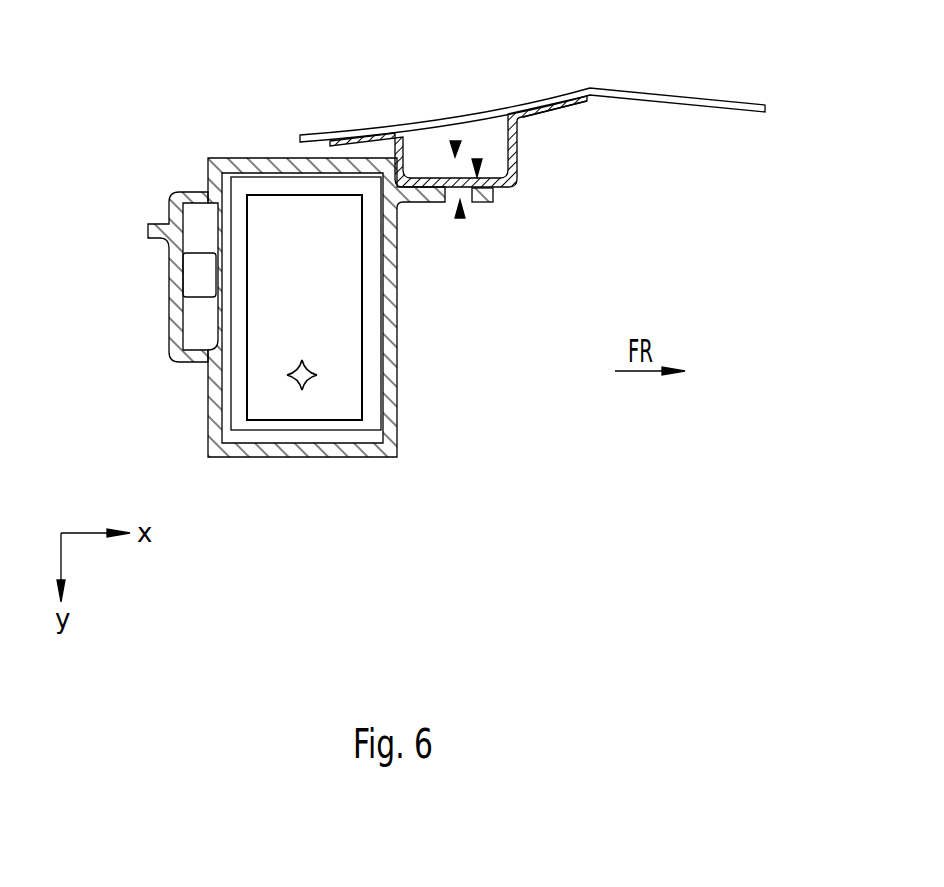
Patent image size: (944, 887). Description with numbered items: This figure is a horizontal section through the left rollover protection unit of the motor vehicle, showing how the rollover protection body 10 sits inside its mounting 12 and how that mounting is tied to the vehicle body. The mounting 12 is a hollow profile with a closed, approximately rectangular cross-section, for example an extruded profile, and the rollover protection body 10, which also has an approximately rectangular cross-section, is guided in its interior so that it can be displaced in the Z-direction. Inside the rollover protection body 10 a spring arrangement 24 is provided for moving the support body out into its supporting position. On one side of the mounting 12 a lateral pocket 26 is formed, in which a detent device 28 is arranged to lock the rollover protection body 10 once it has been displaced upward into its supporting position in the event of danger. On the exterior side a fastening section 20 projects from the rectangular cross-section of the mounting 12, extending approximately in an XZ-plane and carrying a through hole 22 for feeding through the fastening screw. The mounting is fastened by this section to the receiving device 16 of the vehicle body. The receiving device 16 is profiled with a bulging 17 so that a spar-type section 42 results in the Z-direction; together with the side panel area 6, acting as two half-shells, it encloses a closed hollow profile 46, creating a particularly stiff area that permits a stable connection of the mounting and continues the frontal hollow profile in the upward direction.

The side panel area 6 is at (650, 92).
The rollover protection body 10 is at (370, 356).
The mounting 12 is at (377, 448).
The receiving device 16 is at (573, 103).
The bulging 17 is at (478, 160).
The fastening section 20 is at (483, 194).
The through hole 22 is at (460, 218).
The spring arrangement 24 is at (302, 383).
The lateral pocket 26 is at (198, 333).
The detent device 28 is at (195, 277).
The spar-type section 42 is at (517, 155).
The hollow profile 46 is at (456, 142).